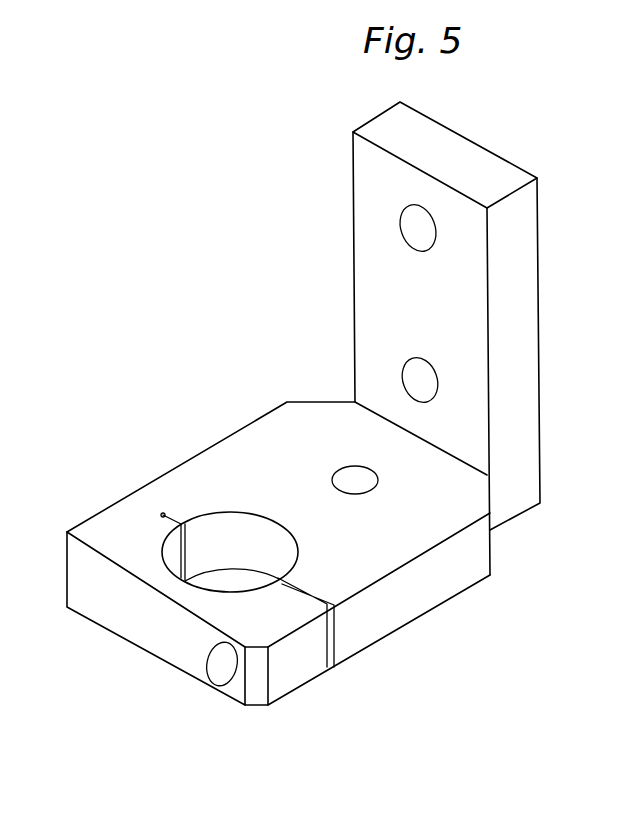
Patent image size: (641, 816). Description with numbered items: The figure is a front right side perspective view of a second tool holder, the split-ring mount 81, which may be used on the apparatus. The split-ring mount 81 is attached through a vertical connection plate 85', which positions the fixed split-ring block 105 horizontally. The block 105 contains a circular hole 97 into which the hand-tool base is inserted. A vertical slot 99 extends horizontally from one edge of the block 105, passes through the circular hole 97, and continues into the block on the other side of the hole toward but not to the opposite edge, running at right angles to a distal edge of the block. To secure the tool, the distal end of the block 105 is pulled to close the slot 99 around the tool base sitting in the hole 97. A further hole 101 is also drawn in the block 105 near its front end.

The split-ring mount 81 is at (197, 455).
The vertical connection plate 85' is at (484, 338).
The circular hole 97 is at (237, 578).
The vertical slot 99 is at (318, 602).
The hole 101 is at (222, 665).
The fixed split-ring block 105 is at (383, 550).